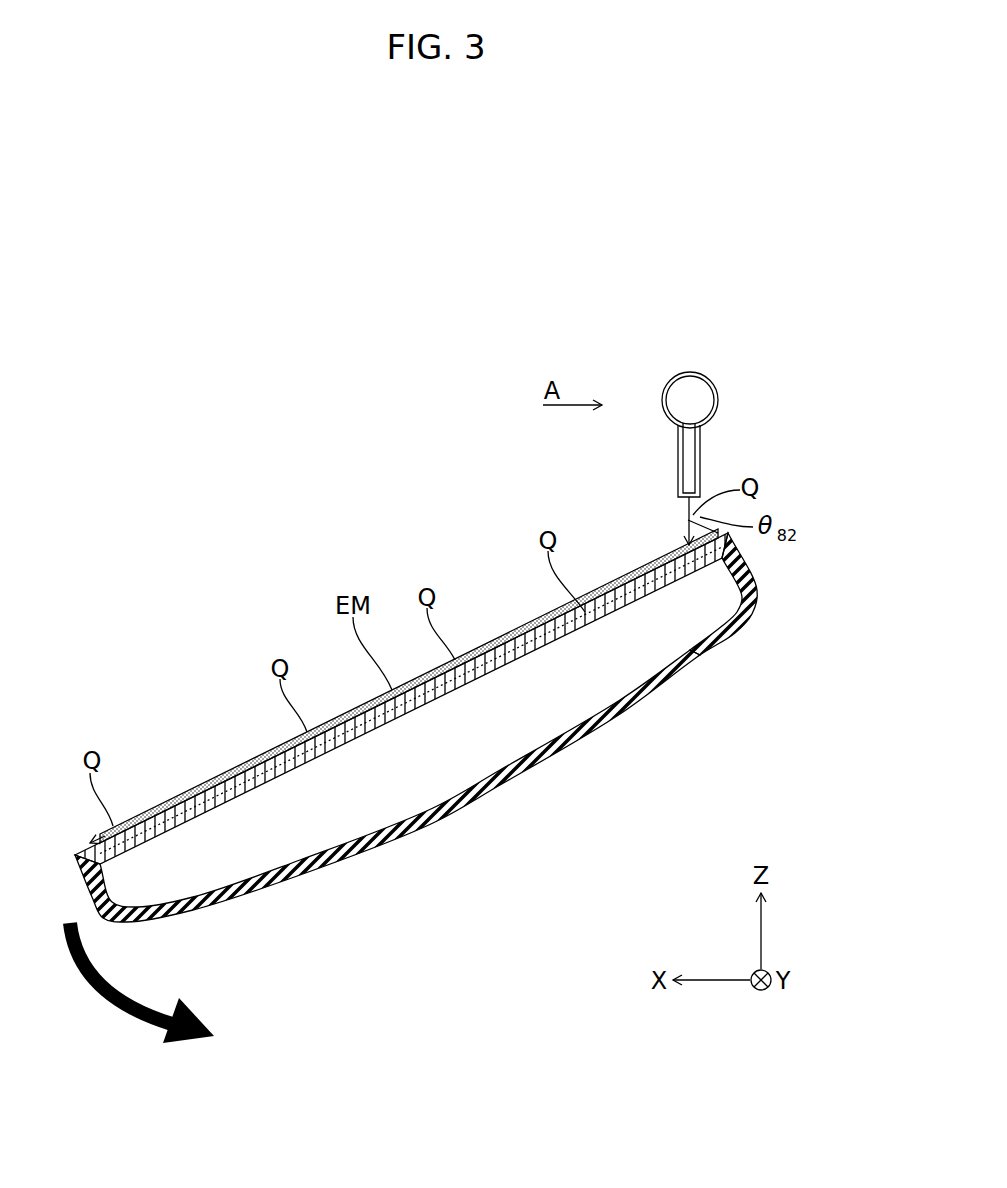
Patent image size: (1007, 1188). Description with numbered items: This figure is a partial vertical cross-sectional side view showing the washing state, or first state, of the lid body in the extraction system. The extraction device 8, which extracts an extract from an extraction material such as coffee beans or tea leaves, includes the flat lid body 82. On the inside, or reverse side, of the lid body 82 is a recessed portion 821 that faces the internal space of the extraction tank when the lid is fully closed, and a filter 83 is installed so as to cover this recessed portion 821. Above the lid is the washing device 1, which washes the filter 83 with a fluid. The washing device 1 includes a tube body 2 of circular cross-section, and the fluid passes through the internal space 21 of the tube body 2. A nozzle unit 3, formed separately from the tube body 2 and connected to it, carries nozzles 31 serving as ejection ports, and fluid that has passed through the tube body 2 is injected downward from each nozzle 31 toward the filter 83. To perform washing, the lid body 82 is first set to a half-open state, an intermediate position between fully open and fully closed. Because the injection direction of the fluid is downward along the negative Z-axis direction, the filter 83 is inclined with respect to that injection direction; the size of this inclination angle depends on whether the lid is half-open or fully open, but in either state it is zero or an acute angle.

The washing device 1 is at (715, 439).
The tube body 2 is at (711, 381).
The internal space 21 is at (700, 402).
The nozzle unit 3 is at (683, 484).
The nozzle 31 is at (683, 503).
The extraction device 8 is at (456, 725).
The lid body 82 is at (759, 604).
The recessed portion 821 is at (458, 760).
The filter 83 is at (233, 768).